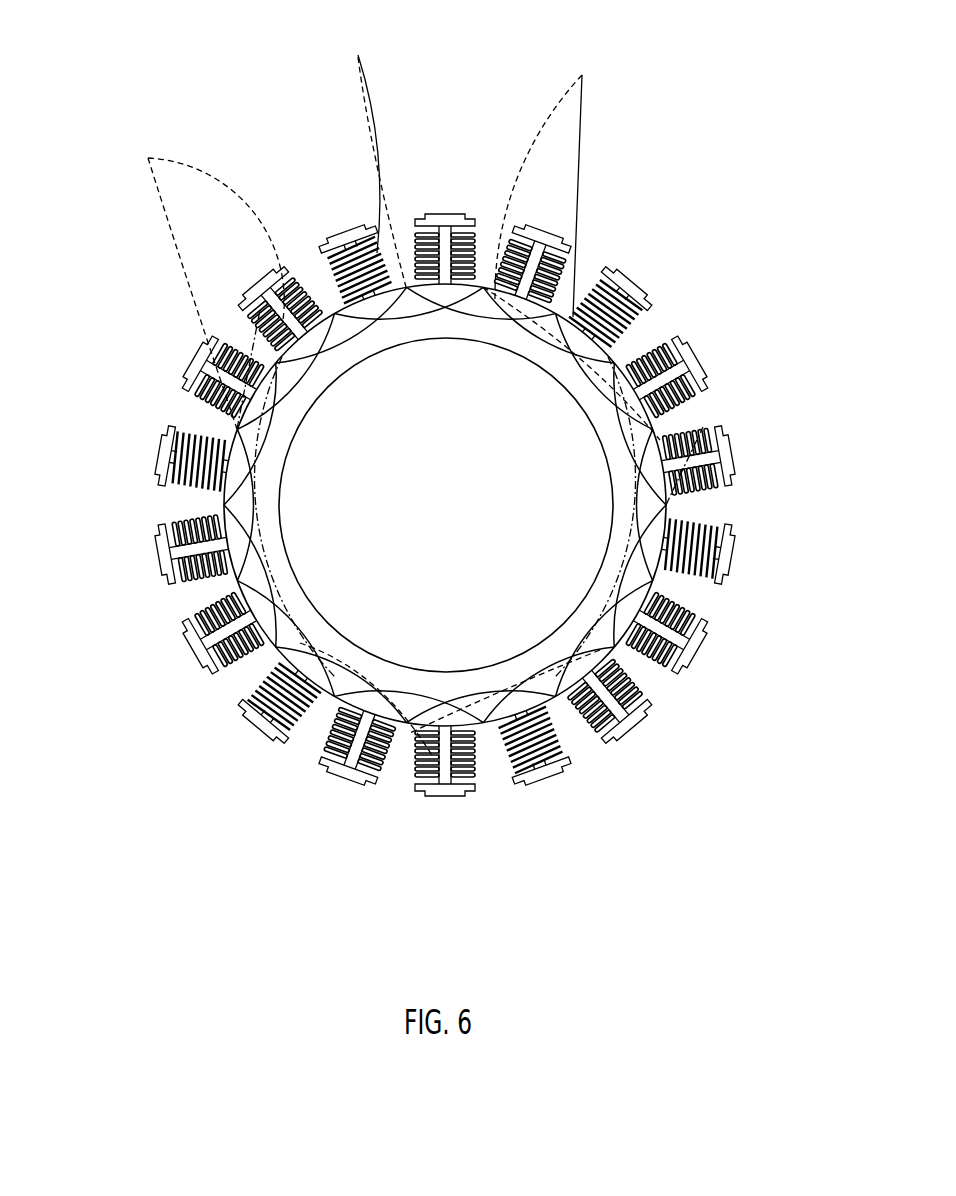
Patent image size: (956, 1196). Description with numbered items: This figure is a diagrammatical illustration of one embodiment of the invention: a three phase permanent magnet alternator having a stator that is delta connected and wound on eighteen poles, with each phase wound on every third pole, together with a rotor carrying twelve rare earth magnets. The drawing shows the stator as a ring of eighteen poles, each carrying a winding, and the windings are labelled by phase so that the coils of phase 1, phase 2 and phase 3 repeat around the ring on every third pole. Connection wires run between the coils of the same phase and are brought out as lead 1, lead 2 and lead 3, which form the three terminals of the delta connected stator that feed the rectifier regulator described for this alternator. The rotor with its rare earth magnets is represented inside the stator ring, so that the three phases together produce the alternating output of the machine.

The phase 1 coils and lead 1 is at (447, 509).
The phase 2 coils and lead 2 is at (442, 464).
The phase 3 coils and lead 3 is at (445, 476).